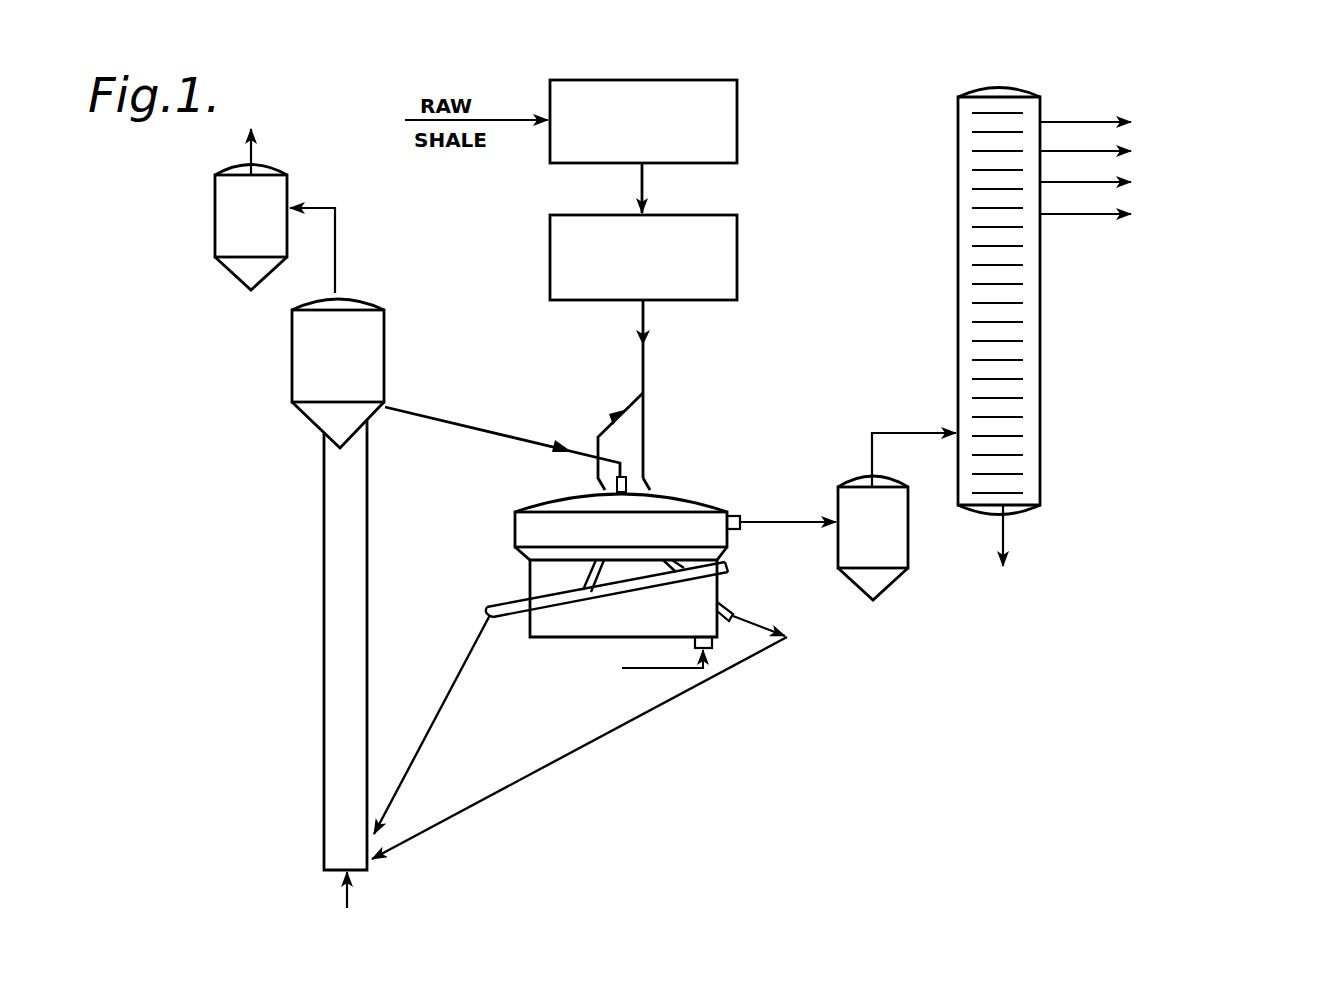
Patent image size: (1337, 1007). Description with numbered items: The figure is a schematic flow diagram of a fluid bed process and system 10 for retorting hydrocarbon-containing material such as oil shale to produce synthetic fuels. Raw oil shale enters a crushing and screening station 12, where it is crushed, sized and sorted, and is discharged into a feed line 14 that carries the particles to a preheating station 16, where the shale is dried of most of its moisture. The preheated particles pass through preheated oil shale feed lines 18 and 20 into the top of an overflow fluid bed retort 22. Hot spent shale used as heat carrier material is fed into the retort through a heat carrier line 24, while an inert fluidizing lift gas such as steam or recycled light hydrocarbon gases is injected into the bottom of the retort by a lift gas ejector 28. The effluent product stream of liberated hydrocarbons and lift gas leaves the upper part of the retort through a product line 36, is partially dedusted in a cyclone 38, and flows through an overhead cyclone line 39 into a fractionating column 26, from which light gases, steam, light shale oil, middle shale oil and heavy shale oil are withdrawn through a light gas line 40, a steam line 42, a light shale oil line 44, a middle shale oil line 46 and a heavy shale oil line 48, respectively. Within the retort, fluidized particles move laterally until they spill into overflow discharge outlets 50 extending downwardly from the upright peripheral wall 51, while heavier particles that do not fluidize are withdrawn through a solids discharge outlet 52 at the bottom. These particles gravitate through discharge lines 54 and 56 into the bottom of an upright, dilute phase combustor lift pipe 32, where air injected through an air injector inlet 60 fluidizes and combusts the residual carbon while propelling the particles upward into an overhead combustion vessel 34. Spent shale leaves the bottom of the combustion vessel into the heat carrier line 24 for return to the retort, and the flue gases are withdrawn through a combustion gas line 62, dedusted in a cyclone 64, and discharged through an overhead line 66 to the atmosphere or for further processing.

The fluid bed process and system 10 is at (745, 416).
The crushing and screening station 12 is at (737, 140).
The feed line 14 is at (644, 184).
The preheating station 16 is at (737, 272).
The preheated oil shale feed line 18 is at (616, 416).
The preheated oil shale feed line 20 is at (646, 438).
The overflow fluid bed retort 22 is at (688, 500).
The heat carrier line 24 is at (516, 442).
The fractionating column 26 is at (968, 258).
The lift gas ejector 28 is at (696, 670).
The combustor lift pipe 32 is at (330, 645).
The combustion vessel 34 is at (302, 359).
The product line 36 is at (775, 520).
The cyclone 38 is at (898, 522).
The overhead cyclone line 39 is at (922, 432).
The light gas line 40 is at (1062, 122).
The steam line 42 is at (1062, 151).
The light shale oil line 44 is at (1062, 182).
The middle shale oil line 46 is at (1062, 214).
The heavy shale oil line 48 is at (1008, 531).
The overflow discharge outlets 50 is at (510, 588).
The upright peripheral wall 51 is at (520, 566).
The solids discharge outlet 52 is at (735, 610).
The discharge line 54 is at (447, 697).
The discharge line 56 is at (553, 763).
The air injector inlet 60 is at (350, 905).
The combustion gas line 62 is at (336, 255).
The cyclone 64 is at (230, 218).
The overhead line 66 is at (248, 137).